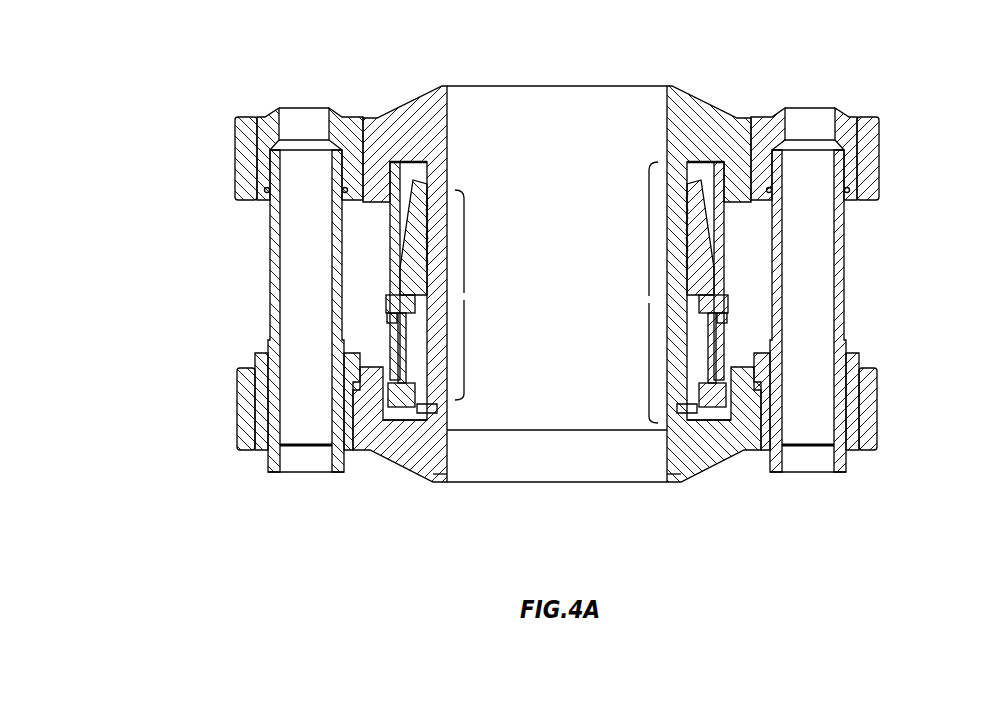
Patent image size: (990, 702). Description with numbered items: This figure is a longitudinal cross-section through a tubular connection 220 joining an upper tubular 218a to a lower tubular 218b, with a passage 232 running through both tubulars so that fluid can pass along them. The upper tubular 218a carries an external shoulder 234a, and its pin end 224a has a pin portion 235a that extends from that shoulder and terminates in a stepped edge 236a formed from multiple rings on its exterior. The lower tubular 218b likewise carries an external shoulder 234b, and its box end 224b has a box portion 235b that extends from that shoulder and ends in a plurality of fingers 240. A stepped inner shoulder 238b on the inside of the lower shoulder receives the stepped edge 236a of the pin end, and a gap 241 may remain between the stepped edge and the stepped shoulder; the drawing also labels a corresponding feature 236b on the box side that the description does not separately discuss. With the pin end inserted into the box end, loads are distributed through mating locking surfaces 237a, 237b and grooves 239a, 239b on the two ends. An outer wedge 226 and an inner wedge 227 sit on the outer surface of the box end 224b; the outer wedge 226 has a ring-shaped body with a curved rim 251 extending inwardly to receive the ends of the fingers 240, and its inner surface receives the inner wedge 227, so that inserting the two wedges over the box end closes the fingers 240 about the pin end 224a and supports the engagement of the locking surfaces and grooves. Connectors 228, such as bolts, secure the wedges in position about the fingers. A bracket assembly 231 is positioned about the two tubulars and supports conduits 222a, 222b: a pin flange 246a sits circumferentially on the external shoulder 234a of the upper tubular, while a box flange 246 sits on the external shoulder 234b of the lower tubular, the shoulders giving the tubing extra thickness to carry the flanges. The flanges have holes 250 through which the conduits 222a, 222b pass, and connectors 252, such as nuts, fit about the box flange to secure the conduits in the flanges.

The tubular connection 220 is at (257, 72).
The conduit 222a is at (298, 177).
The conduit 222b is at (808, 189).
The pin end 224a is at (443, 85).
The box end 224b is at (412, 472).
The upper tubular 218a is at (670, 85).
The lower tubular 218b is at (667, 458).
The external shoulder 234a is at (400, 105).
The external shoulder 234b is at (715, 443).
The stepped edge 236a is at (677, 433).
The second body upper collar 236b is at (692, 203).
The bracket assembly 231 is at (836, 94).
The box flange 246 is at (862, 405).
The pin flange 246a is at (870, 125).
The holes 250 is at (263, 455).
The connectors 252 is at (260, 384).
The curved rim 251 is at (683, 182).
The outer wedge 226 is at (717, 253).
The inner wedge 227 is at (723, 284).
The connectors 228 is at (723, 313).
The passage 232 is at (447, 455).
The pin portion 235a is at (646, 294).
The box portion 235b is at (465, 293).
The locking surface 237a is at (440, 266).
The locking surface 237b is at (423, 282).
The stepped inner shoulder 238b is at (435, 473).
The groove 239a is at (427, 214).
The groove 239b is at (425, 229).
The fingers 240 is at (423, 358).
The gap 241 is at (400, 428).